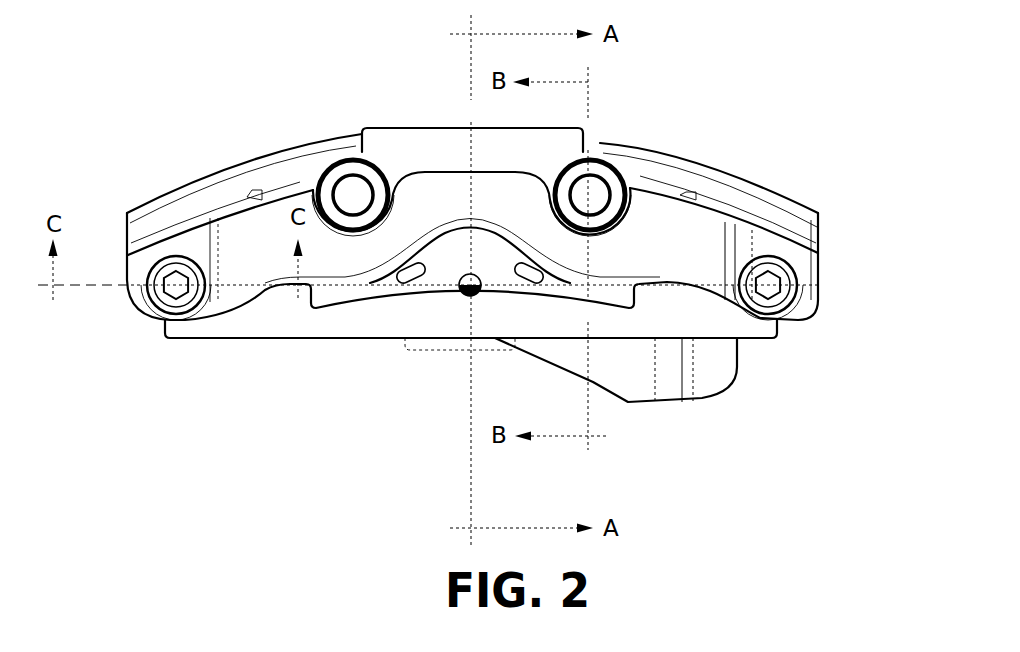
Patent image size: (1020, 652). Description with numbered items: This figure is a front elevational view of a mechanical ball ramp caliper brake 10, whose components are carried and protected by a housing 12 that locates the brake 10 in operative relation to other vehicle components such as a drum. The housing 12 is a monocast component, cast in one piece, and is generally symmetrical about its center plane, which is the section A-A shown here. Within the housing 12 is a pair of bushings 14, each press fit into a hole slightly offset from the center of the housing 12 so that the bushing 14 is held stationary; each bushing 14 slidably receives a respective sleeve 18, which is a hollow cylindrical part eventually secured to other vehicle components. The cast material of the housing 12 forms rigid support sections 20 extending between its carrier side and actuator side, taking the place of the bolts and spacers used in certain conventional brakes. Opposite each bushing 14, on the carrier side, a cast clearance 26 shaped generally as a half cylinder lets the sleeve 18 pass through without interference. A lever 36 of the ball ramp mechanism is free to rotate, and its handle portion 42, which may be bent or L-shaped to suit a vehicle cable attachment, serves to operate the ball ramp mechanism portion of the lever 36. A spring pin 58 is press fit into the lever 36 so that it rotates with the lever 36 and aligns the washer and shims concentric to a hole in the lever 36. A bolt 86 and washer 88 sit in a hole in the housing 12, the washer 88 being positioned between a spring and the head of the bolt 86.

The mechanical ball ramp caliper brake 10 is at (219, 122).
The housing 12 is at (754, 158).
The bushing 14 is at (588, 160).
The sleeve 18 is at (608, 176).
The rigid support section 20 is at (133, 300).
The cast clearance 26 is at (367, 222).
The lever 36 is at (700, 428).
The handle portion 42 is at (720, 375).
The spring pin 58 is at (470, 292).
The bolt 86 is at (770, 285).
The washer 88 is at (780, 270).